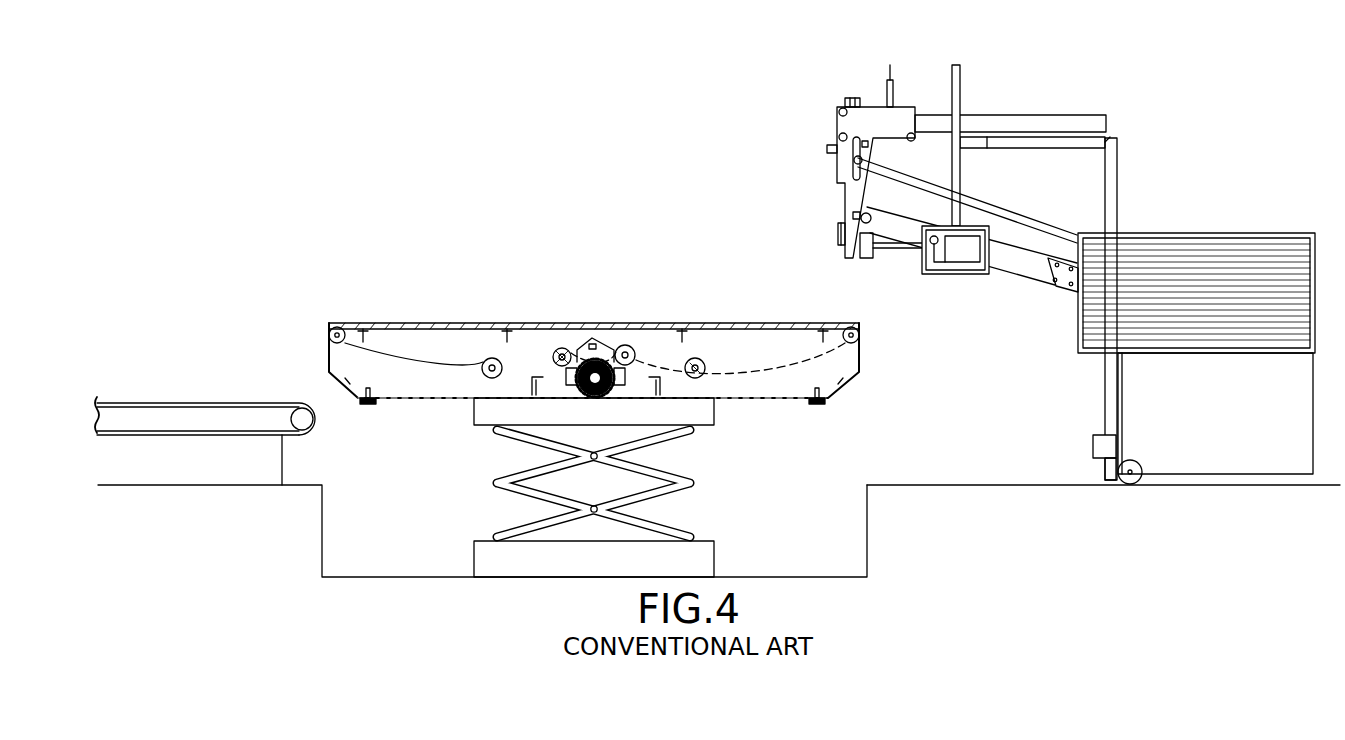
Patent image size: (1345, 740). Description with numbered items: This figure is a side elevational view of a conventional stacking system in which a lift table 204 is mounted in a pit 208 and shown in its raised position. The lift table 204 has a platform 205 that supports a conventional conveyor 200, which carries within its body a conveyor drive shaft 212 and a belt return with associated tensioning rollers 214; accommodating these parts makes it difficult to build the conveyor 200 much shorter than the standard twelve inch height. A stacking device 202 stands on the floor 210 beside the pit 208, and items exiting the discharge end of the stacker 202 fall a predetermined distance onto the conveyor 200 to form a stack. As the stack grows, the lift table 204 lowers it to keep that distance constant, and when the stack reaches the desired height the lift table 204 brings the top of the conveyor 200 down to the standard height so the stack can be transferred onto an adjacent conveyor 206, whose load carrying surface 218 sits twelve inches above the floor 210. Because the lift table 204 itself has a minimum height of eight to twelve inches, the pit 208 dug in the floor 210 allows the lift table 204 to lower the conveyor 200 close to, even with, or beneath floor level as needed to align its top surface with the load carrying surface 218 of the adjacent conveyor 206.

The conveyor 200 is at (681, 316).
The stacking device 202 is at (1232, 458).
The lift table 204 is at (714, 558).
The platform 205 is at (714, 410).
The adjacent conveyor 206 is at (166, 455).
The pit 208 is at (867, 578).
The floor 210 is at (980, 487).
The conveyor drive shaft 212 is at (608, 345).
The tensioning rollers 214 is at (553, 345).
The load carrying surface 218 is at (248, 403).